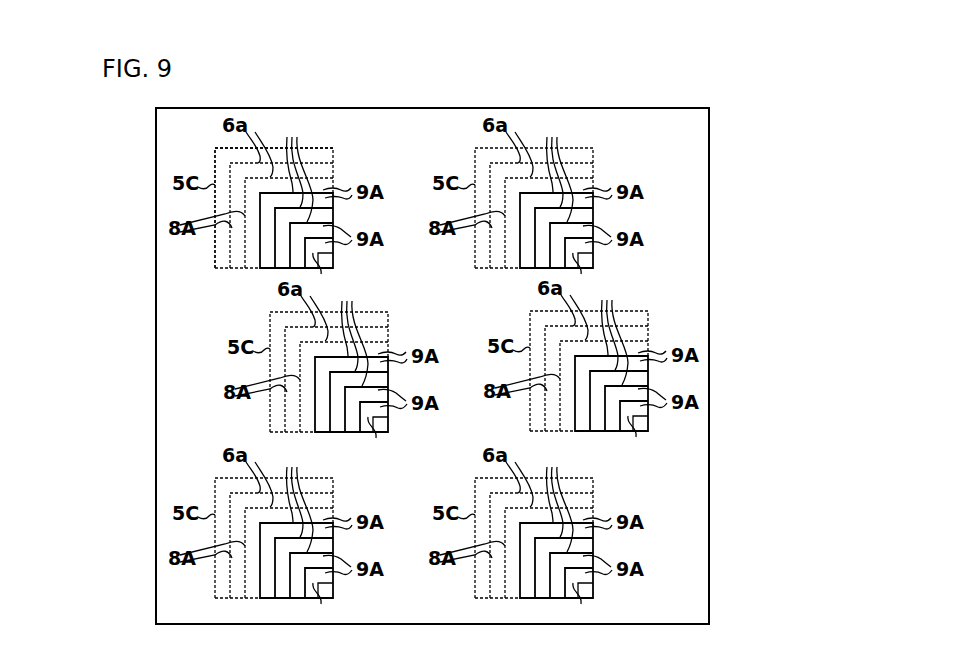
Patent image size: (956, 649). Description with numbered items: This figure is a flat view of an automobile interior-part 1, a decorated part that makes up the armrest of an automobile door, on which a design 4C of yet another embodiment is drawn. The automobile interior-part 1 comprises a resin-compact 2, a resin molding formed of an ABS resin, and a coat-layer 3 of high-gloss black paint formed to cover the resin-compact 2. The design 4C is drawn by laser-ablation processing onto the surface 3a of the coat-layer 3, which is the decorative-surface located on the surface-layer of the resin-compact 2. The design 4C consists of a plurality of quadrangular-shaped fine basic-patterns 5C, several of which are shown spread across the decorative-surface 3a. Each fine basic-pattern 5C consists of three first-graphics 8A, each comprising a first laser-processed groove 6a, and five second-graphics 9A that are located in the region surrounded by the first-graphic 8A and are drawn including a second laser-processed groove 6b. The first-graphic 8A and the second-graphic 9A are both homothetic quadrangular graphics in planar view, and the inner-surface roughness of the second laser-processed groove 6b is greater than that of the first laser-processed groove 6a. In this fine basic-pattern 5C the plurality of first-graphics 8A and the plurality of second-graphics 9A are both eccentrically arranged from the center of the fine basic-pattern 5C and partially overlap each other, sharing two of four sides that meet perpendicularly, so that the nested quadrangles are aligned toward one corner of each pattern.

The automobile interior-part 1 is at (728, 141).
The resin-compact 2 is at (709, 191).
The coat-layer 3 is at (709, 242).
The surface 3a is at (709, 302).
The design 4C is at (180, 154).
The fine basic-pattern 5C is at (410, 373).
The first laser-processed groove 6a is at (405, 310).
The second laser-processed groove 6b is at (476, 369).
The first-graphic 8A is at (364, 390).
The second-graphic 9A is at (479, 389).